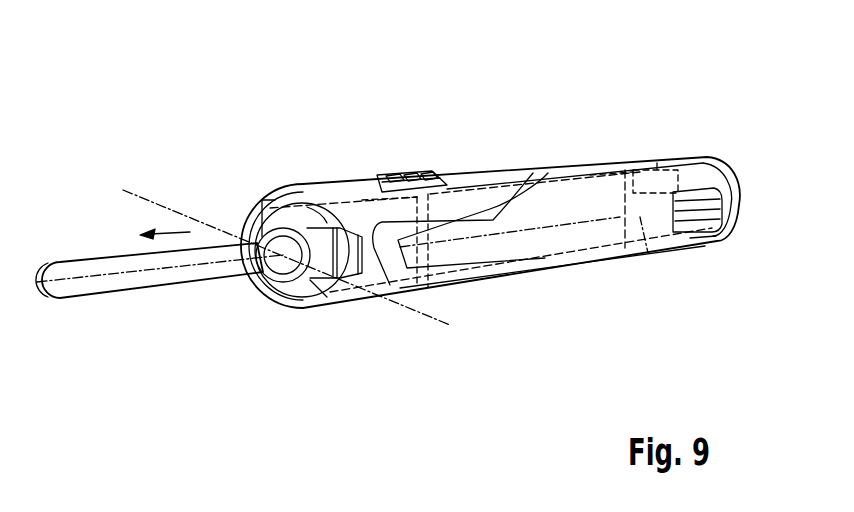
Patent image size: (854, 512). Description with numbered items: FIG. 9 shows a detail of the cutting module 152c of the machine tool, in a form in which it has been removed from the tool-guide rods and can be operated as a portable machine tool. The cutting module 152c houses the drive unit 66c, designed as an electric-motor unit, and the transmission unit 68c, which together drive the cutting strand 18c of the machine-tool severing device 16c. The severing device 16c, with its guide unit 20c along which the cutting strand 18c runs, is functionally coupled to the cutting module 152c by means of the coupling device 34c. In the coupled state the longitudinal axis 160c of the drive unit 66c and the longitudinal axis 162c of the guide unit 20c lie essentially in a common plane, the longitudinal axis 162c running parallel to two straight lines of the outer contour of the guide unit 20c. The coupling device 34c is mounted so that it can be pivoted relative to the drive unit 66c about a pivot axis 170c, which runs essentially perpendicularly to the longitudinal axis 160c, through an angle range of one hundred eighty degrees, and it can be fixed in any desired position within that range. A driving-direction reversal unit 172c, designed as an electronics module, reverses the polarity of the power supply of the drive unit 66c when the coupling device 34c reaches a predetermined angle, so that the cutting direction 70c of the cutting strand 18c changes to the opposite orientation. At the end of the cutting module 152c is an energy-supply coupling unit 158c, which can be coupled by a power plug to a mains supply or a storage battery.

The cutting module 152c is at (650, 82).
The driving-direction reversal unit 172c is at (664, 157).
The pivot axis 170c is at (135, 186).
The machine-tool severing device 16c is at (123, 213).
The cutting direction 70c is at (172, 229).
The longitudinal axis of the guide unit 162c is at (40, 282).
The cutting strand 18c is at (90, 298).
The guide unit 20c is at (160, 281).
The coupling device 34c is at (281, 315).
The transmission unit 68c is at (380, 310).
The drive unit 66c is at (553, 267).
The longitudinal axis of the drive unit 160c is at (648, 253).
The energy-supply coupling unit 158c is at (705, 256).